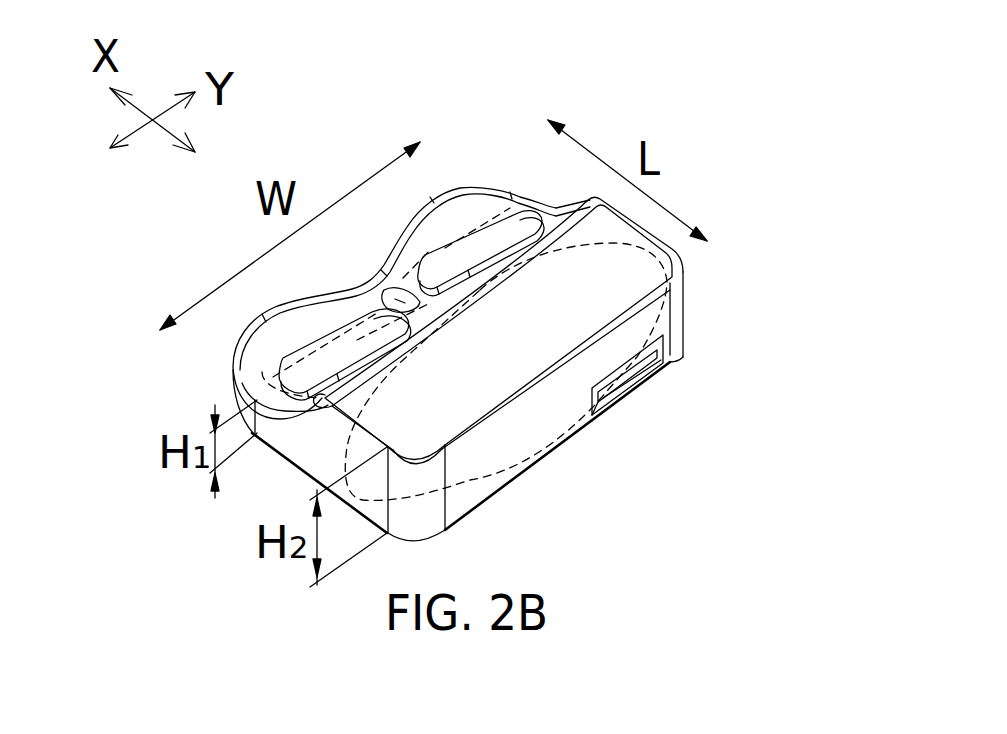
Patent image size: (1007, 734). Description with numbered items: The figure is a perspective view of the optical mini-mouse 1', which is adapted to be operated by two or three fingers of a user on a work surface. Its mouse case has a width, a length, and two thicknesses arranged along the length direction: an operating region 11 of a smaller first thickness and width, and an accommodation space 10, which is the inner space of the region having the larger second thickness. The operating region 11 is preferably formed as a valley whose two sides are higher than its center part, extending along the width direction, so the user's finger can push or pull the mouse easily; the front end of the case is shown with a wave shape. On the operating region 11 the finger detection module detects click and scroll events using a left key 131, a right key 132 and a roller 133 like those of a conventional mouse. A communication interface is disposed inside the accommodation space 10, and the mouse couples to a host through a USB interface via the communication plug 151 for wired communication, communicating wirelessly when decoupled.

The optical mini-mouse 1' is at (620, 66).
The accommodation space 10 is at (487, 472).
The operating region 11 is at (350, 261).
The left key 131 is at (292, 373).
The right key 132 is at (527, 220).
The roller 133 is at (402, 300).
The communication plug 151 is at (630, 370).